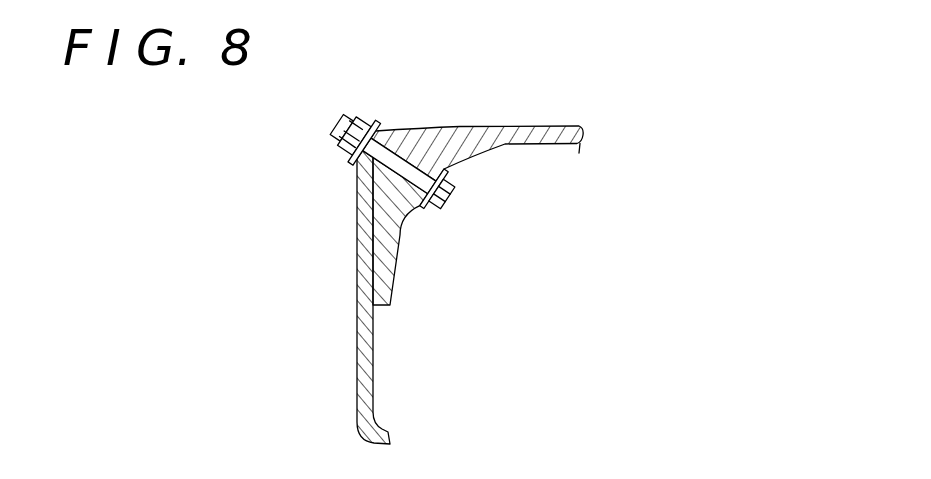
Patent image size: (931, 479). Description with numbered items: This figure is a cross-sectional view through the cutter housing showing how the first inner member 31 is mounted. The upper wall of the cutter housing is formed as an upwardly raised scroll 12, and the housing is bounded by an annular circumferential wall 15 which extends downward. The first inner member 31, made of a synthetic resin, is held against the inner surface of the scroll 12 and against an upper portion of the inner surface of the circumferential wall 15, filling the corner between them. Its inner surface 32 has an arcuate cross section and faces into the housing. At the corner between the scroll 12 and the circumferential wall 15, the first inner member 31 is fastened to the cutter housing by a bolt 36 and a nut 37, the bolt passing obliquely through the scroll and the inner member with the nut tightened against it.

The scroll 12 is at (536, 126).
The circumferential wall 15 is at (357, 283).
The first inner member 31 is at (424, 152).
The inner surface 32 is at (397, 235).
The bolt 36 is at (448, 192).
The nut 37 is at (362, 115).